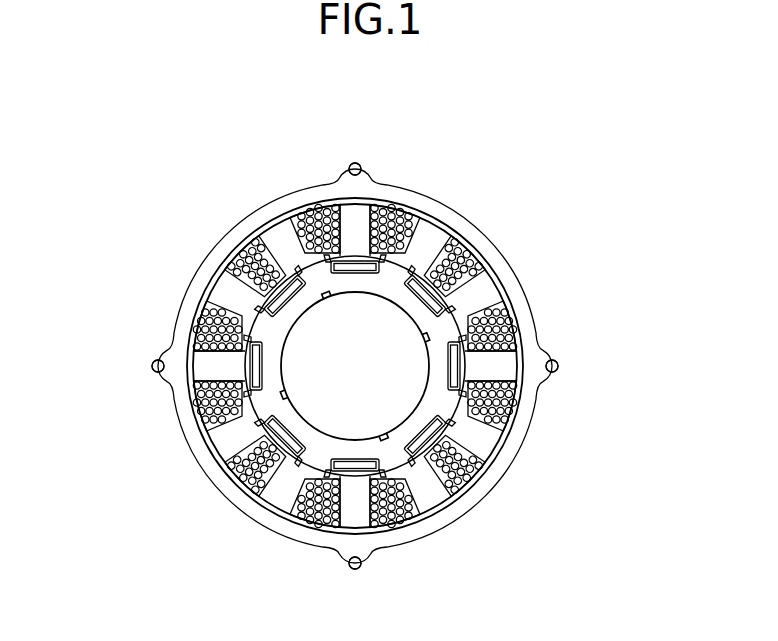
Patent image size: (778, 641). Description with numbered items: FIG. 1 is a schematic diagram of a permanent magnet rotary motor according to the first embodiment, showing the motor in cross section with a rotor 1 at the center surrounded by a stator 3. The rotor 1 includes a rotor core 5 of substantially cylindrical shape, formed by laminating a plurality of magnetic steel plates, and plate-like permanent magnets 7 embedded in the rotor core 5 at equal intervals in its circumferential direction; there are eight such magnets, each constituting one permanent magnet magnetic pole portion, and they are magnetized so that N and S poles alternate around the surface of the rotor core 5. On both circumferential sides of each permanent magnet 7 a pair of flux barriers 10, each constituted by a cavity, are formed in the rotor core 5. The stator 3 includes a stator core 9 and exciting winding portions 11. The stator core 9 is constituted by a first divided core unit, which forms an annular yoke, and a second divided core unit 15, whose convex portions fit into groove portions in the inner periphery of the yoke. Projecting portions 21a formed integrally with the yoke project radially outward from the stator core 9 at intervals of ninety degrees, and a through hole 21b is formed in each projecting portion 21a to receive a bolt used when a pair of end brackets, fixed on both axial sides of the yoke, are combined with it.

The rotor 1 is at (373, 350).
The stator 3 is at (458, 197).
The rotor core 5 is at (473, 288).
The permanent magnet 7 is at (473, 478).
The stator core 9 is at (473, 236).
The flux barrier 10 is at (487, 449).
The exciting winding portion 11 is at (478, 205).
The second divided core unit 15 is at (432, 337).
The projecting portion 21a is at (366, 574).
The through hole 21b is at (347, 574).